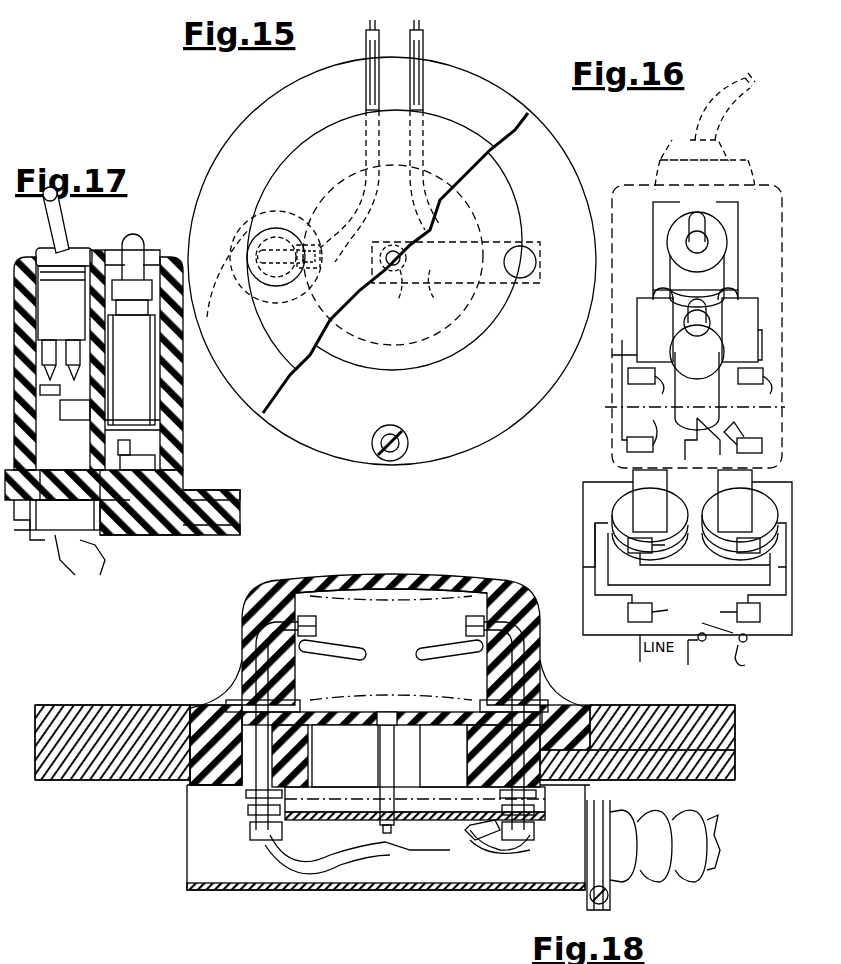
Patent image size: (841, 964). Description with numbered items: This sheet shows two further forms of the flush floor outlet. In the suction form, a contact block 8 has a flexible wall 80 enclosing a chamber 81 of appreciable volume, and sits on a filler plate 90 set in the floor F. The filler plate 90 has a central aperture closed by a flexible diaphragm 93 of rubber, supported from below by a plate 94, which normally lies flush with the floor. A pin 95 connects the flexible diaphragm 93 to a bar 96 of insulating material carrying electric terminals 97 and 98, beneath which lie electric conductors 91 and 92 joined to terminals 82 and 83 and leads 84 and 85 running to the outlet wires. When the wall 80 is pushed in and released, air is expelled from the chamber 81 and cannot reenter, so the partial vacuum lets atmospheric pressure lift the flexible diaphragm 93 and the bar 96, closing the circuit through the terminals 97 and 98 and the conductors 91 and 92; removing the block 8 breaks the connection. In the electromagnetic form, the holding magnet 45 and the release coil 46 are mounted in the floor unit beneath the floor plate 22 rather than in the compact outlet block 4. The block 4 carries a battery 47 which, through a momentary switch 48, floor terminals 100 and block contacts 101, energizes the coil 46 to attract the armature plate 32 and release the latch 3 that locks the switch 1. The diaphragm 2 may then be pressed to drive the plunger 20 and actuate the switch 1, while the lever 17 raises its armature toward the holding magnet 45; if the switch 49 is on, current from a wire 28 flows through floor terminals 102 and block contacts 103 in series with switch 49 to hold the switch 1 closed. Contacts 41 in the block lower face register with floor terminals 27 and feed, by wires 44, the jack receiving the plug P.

In FIG. 16, the switch 1 is at (693, 649).
In FIG. 17, the diaphragm 2 is at (225, 490).
In FIG. 17, the latch 3 is at (65, 569).
In FIG. 17, the outlet block 4 is at (183, 385).
In FIG. 16, the outlet block 4 is at (612, 407).
In FIG. 15, the contact block 8 is at (290, 168).
In FIG. 18, the contact block 8 is at (250, 618).
In FIG. 17, the lever 17 is at (104, 571).
In FIG. 17, the plunger 20 is at (255, 494).
In FIG. 17, the floor plate 22 is at (215, 535).
In FIG. 17, the terminals 27 is at (80, 398).
In FIG. 16, the terminals 27 is at (695, 524).
In FIG. 17, the wires 28 is at (20, 532).
In FIG. 16, the wires 28 is at (583, 567).
In FIG. 17, the plate 32 is at (40, 545).
In FIG. 17, the contacts 41 is at (95, 430).
In FIG. 16, the contacts 41 is at (699, 330).
In FIG. 17, the wires 44 is at (105, 395).
In FIG. 16, the wires 44 is at (653, 250).
In FIG. 16, the holding magnet 45 is at (708, 492).
In FIG. 17, the magnetic coil 46 is at (65, 515).
In FIG. 16, the magnetic coil 46 is at (620, 513).
In FIG. 17, the battery 47 is at (135, 375).
In FIG. 16, the battery 47 is at (697, 377).
In FIG. 17, the switch 48 is at (137, 248).
In FIG. 16, the switch 48 is at (690, 330).
In FIG. 17, the switch 49 is at (64, 263).
In FIG. 16, the switch 49 is at (718, 275).
In FIG. 15, the flexible wall 80 is at (393, 255).
In FIG. 18, the flexible wall 80 is at (415, 585).
In FIG. 18, the chamber 81 is at (391, 648).
In FIG. 15, the terminal 82 is at (264, 272).
In FIG. 18, the terminal 82 is at (235, 705).
In FIG. 18, the terminal 83 is at (555, 700).
In FIG. 15, the lead 84 is at (280, 300).
In FIG. 18, the lead 84 is at (250, 662).
In FIG. 18, the lead 85 is at (540, 660).
In FIG. 18, the filler plate 90 is at (188, 708).
In FIG. 18, the electric conductor 91 is at (245, 790).
In FIG. 15, the electric conductor 92 is at (522, 245).
In FIG. 18, the electric conductor 92 is at (480, 760).
In FIG. 15, the flexible diaphragm 93 is at (472, 302).
In FIG. 18, the flexible diaphragm 93 is at (405, 720).
In FIG. 18, the plate 94 is at (325, 738).
In FIG. 15, the pin 95 is at (383, 296).
In FIG. 18, the pin 95 is at (394, 760).
In FIG. 15, the bar 96 is at (434, 296).
In FIG. 18, the bar 96 is at (290, 835).
In FIG. 18, the electric terminal 97 is at (250, 830).
In FIG. 18, the electric terminal 98 is at (536, 812).
In FIG. 17, the electric terminals 100 is at (195, 535).
In FIG. 16, the electric terminals 100 is at (690, 573).
In FIG. 17, the contacts 101 is at (168, 470).
In FIG. 16, the contacts 101 is at (704, 429).
In FIG. 17, the floor terminals 102 is at (150, 540).
In FIG. 16, the floor terminals 102 is at (689, 560).
In FIG. 17, the block contacts 103 is at (183, 460).
In FIG. 16, the block contacts 103 is at (703, 387).
In FIG. 18, the floor F is at (120, 715).
In FIG. 16, the plug P is at (712, 140).